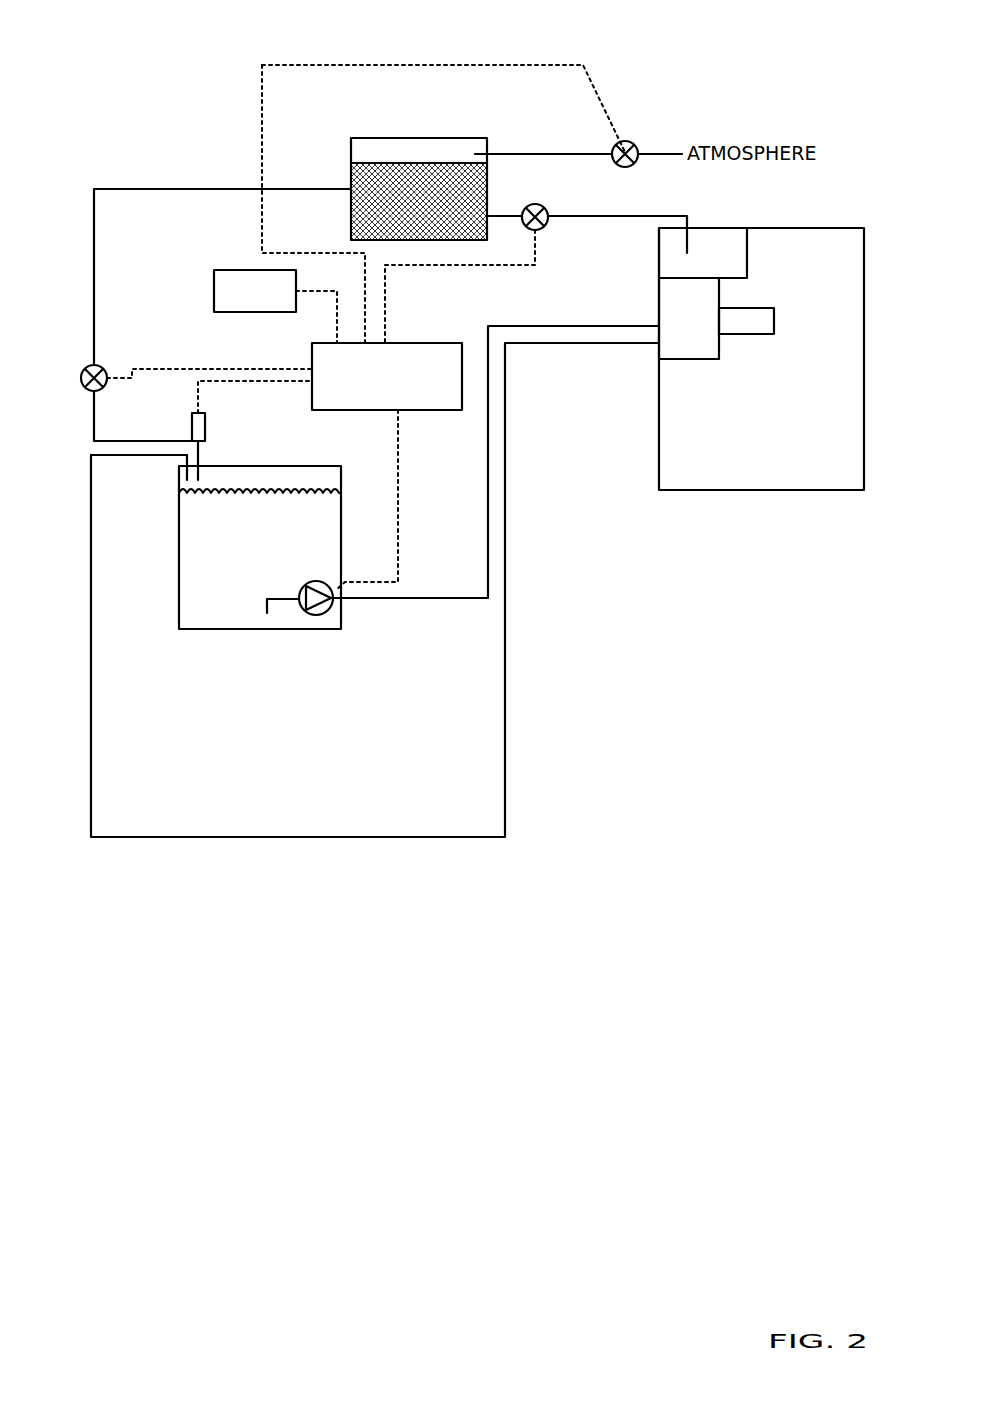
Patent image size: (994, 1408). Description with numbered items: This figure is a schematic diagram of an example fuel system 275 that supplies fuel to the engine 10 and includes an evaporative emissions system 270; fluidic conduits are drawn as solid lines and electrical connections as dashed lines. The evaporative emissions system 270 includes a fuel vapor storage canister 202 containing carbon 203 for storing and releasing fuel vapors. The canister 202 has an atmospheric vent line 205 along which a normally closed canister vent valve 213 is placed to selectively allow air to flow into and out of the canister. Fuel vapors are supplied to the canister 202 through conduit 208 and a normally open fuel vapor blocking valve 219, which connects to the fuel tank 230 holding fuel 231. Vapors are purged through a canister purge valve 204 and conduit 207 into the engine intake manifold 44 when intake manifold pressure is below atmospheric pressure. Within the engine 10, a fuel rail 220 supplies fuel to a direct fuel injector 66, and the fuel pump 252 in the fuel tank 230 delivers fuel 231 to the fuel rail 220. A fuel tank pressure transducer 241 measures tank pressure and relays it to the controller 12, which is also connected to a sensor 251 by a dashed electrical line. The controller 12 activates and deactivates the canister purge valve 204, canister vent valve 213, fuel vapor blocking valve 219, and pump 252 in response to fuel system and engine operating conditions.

The fuel system 275 is at (122, 42).
The evaporative emissions system 270 is at (606, 46).
The fuel vapor storage canister 202 is at (351, 138).
The carbon 203 is at (419, 201).
The atmospheric vent line 205 is at (505, 152).
The canister vent valve 213 is at (620, 141).
The canister purge valve 204 is at (535, 204).
The conduit 207 is at (572, 220).
The engine 10 is at (864, 305).
The intake manifold 44 is at (703, 253).
The fuel rail 220 is at (689, 318).
The direct fuel injector 66 is at (746, 321).
The conduit 208 is at (94, 240).
The fuel vapor blocking valve 219 is at (101, 369).
The fuel tank pressure transducer 241 is at (192, 430).
The controller 12 is at (387, 466).
The sensor 251 is at (275, 306).
The fuel tank 230 is at (210, 466).
The fuel 231 is at (260, 515).
The fuel pump 252 is at (306, 586).